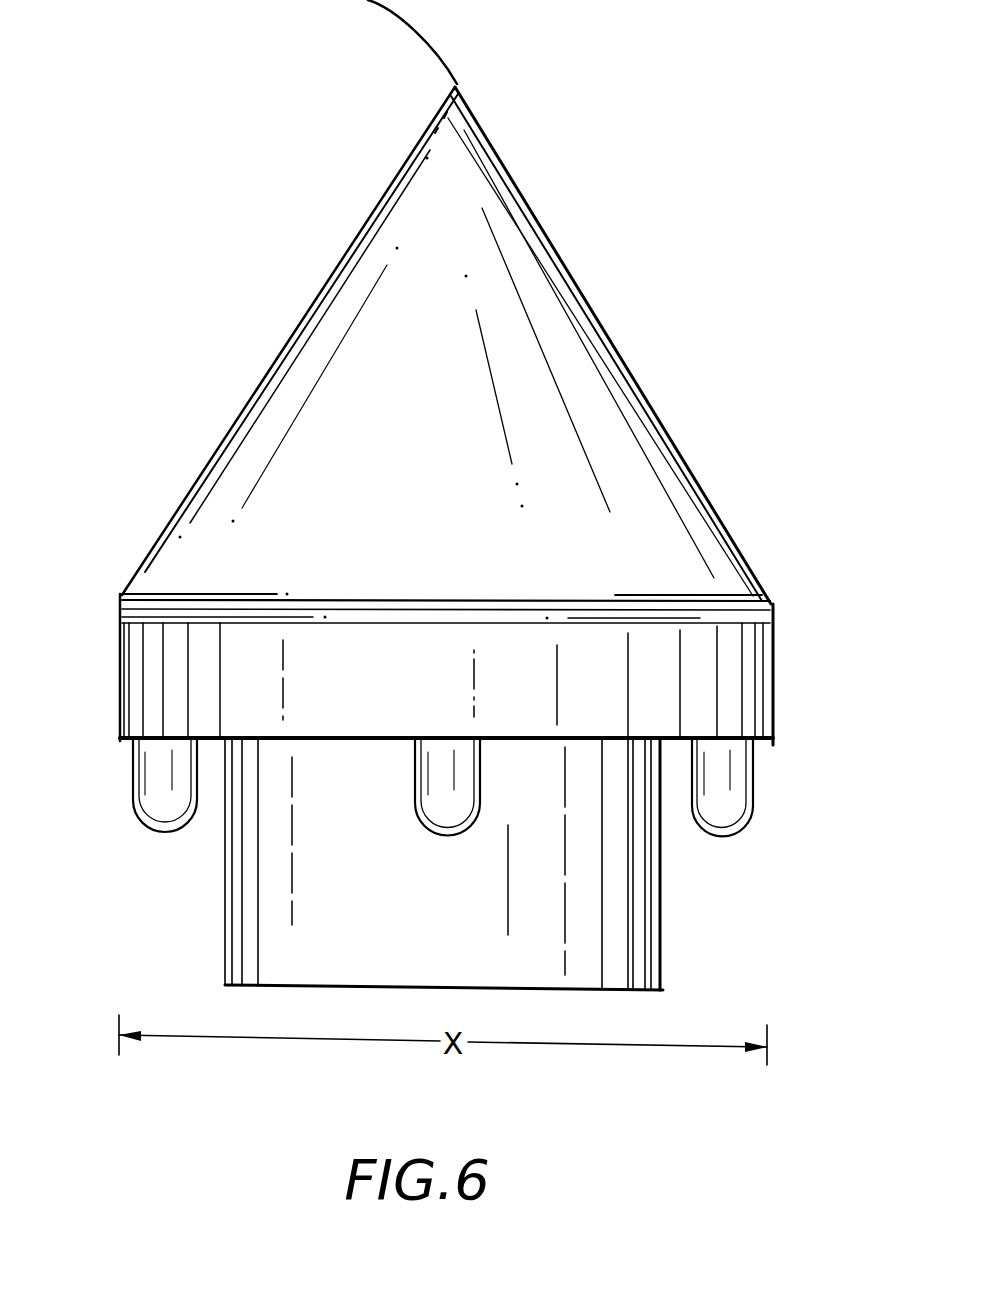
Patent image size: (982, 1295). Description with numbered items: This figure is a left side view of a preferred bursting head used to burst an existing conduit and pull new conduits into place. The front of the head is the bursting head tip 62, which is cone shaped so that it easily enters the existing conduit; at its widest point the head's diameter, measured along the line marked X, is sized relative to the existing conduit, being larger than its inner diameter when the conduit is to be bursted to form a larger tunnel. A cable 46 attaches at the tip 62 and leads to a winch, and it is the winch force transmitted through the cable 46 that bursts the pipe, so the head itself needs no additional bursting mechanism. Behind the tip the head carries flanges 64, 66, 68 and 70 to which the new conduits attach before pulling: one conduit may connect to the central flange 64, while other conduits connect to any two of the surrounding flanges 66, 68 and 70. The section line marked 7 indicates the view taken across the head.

The cable 46 is at (406, 34).
The bursting head tip 62 is at (513, 65).
The flange 64 is at (662, 965).
The flange 66 is at (723, 838).
The flange 68 is at (447, 838).
The flange 70 is at (165, 836).
The section line 7- 7 is at (75, 762).